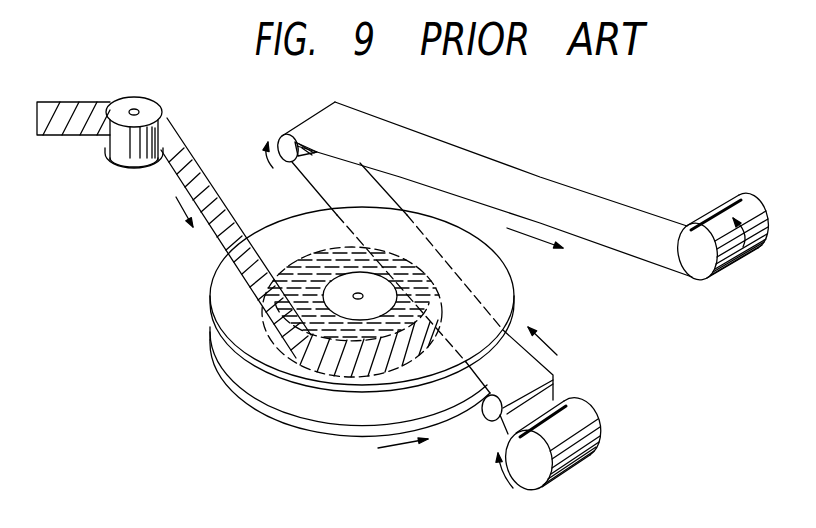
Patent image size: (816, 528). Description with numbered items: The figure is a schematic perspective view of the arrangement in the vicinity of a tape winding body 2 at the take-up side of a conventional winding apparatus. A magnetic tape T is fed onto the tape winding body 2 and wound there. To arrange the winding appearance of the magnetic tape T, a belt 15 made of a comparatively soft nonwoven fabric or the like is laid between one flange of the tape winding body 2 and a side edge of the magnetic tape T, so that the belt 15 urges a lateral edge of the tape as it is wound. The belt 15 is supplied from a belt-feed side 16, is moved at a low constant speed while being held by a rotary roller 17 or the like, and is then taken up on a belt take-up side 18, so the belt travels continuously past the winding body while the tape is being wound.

The magnetic tape T is at (164, 150).
The tape winding body 2 is at (247, 343).
The belt 15 is at (570, 203).
The rotary roller 17 is at (292, 150).
The belt take-up side 18 is at (703, 262).
The belt-feed side 16 is at (587, 468).